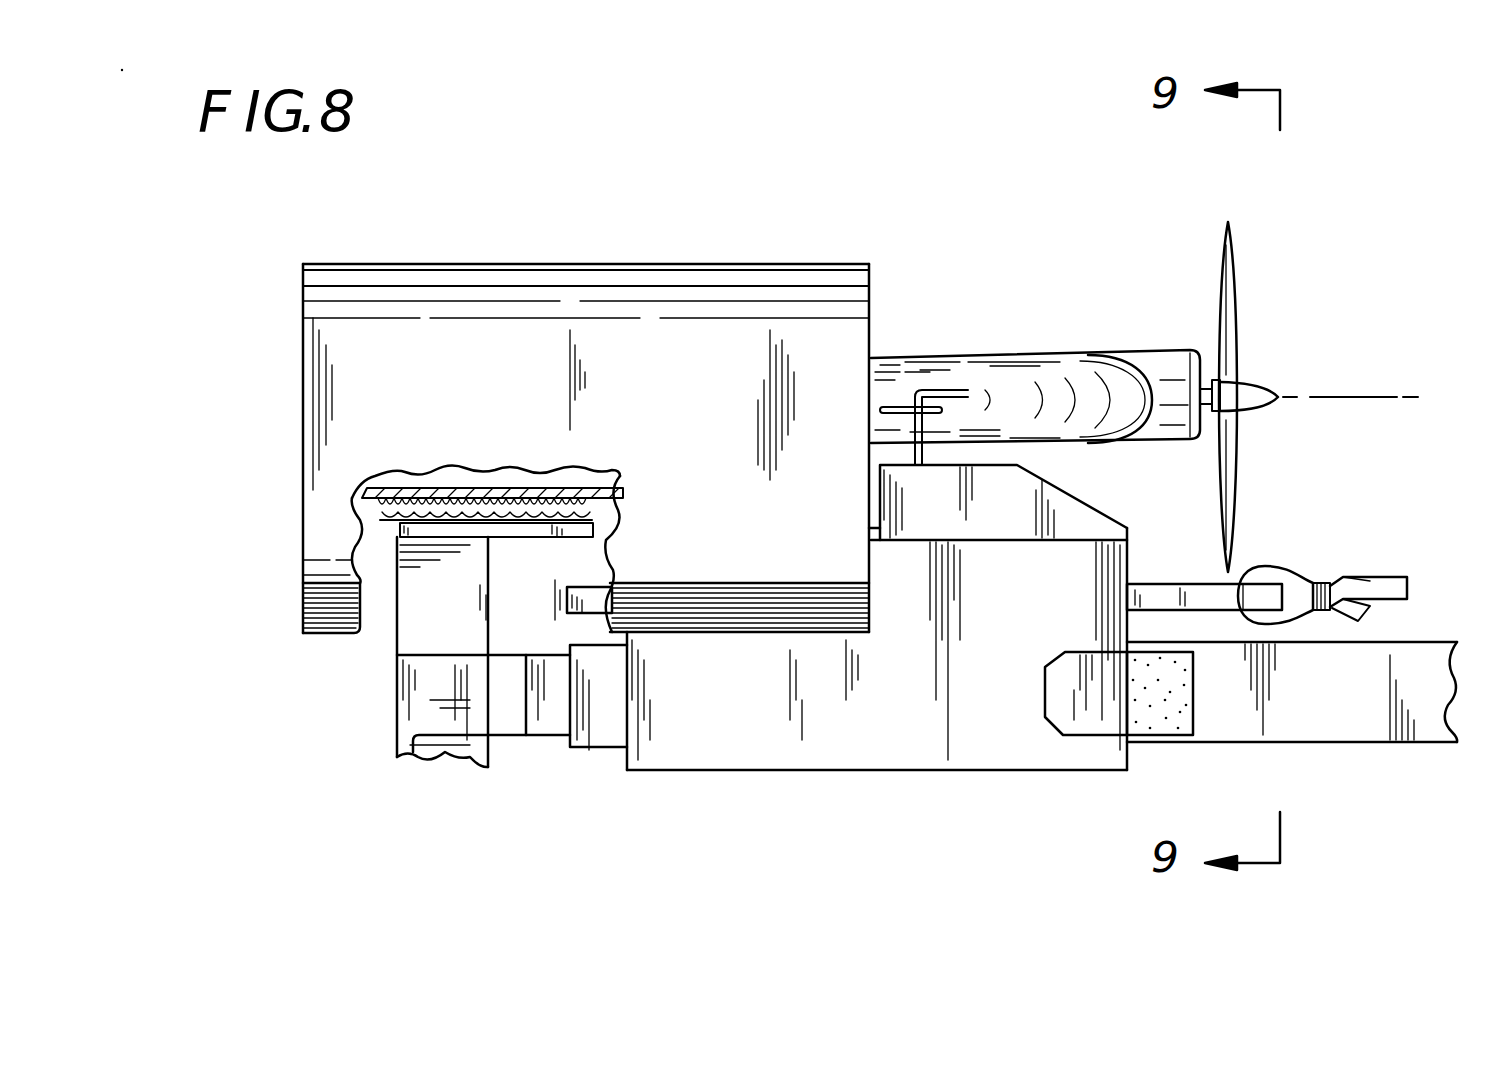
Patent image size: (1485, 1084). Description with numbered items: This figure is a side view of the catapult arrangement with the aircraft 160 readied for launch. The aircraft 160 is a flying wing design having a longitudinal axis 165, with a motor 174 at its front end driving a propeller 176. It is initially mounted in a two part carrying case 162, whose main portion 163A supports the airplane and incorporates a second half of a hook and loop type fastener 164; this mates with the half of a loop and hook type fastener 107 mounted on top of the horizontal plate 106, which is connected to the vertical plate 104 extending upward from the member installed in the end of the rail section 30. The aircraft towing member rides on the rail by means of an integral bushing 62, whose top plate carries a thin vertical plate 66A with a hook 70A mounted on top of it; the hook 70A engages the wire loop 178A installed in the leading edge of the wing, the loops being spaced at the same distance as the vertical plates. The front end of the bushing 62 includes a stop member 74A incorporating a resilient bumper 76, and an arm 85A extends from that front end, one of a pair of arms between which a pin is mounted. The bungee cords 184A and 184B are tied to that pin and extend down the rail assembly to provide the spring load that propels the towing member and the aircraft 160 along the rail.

The carrying case 162 is at (384, 258).
The main portion 163A is at (643, 264).
The second half of a hook and loop type fastener 164 is at (373, 512).
The half of a loop and hook type fastener 107 is at (393, 532).
The vertical plate 104 is at (397, 583).
The horizontal plate 106 is at (520, 540).
The wire loop 178A is at (901, 405).
The hook 70A is at (953, 390).
The aircraft 160 is at (1052, 346).
The motor 174 is at (1147, 351).
The propeller 176 is at (1237, 262).
The longitudinal axis 165 is at (1357, 397).
The vertical plate 66A is at (1074, 496).
The arm 85A is at (1188, 584).
The bungee cord 184A is at (1362, 580).
The bungee cord 184B is at (1368, 599).
The bushing 62 is at (713, 772).
The stop member 74A is at (1088, 736).
The resilient bumper 76 is at (1167, 735).
The section 30 is at (1328, 753).